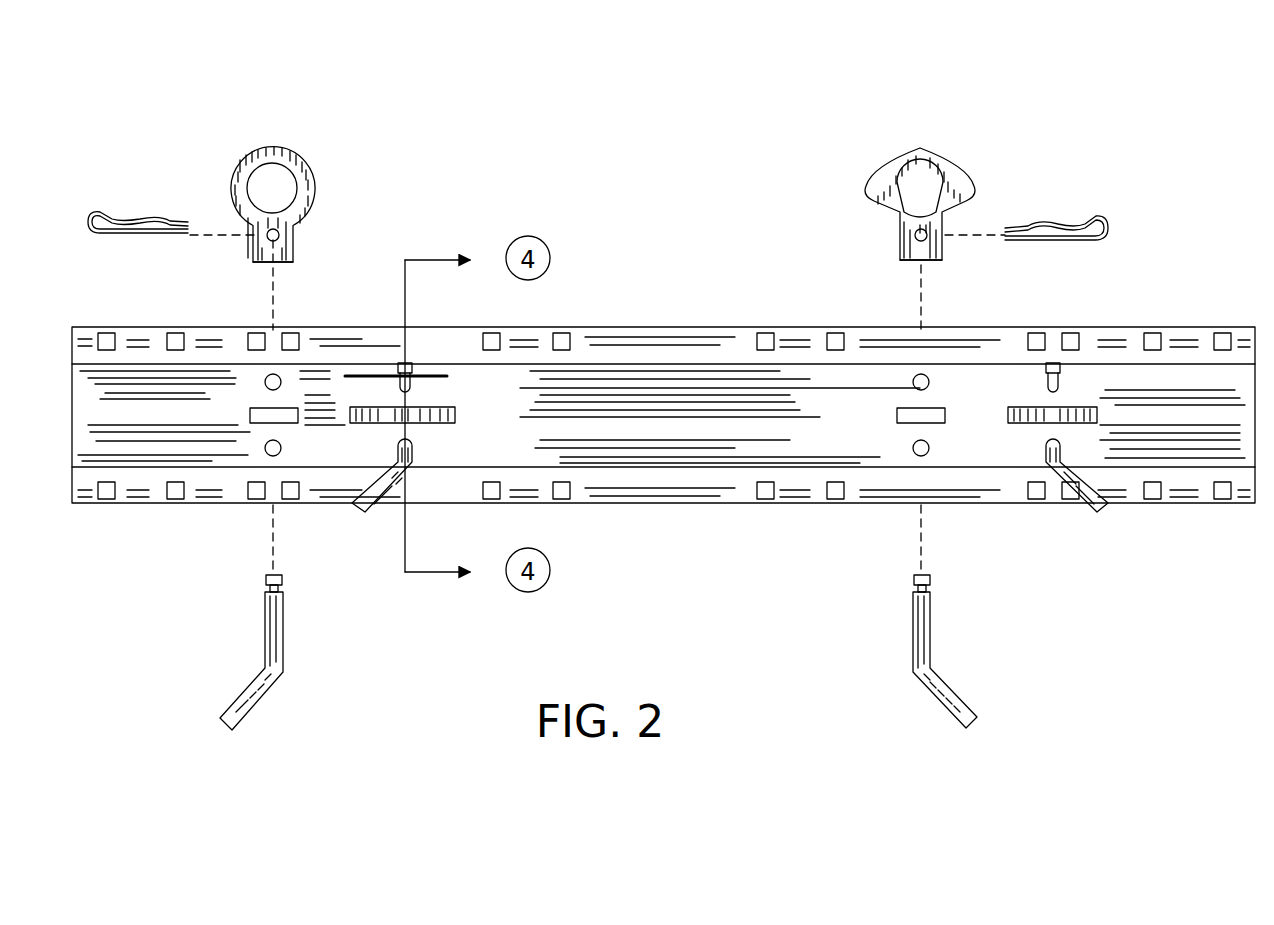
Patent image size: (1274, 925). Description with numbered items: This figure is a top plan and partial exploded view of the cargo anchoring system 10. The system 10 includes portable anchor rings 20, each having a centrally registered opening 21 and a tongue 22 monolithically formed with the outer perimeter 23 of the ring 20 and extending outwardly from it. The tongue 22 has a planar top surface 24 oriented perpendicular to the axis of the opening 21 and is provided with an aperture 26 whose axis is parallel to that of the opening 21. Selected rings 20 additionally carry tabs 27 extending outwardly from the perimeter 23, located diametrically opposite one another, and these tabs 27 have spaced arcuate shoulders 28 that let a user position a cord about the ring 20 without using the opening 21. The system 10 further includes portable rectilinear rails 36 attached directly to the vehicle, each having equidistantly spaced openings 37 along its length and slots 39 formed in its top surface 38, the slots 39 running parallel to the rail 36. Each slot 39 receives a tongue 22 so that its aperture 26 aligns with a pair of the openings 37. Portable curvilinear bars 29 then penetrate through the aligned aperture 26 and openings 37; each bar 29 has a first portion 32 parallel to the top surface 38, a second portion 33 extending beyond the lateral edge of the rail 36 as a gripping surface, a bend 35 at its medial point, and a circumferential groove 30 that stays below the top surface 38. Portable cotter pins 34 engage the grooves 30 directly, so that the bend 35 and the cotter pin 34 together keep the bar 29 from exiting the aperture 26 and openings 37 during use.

The system 10 is at (725, 172).
The portable anchor ring 20 is at (304, 193).
The opening 21 is at (273, 185).
The tongue 22 is at (282, 255).
The outer perimeter 23 is at (278, 142).
The top surface 24 is at (298, 243).
The aperture 26 is at (268, 242).
The tab 27 is at (888, 168).
The arcuate shoulder 28 is at (866, 195).
The portable curvilinear bar 29 is at (380, 505).
The groove 30 is at (1062, 378).
The first portion 32 is at (268, 635).
The second portion 33 is at (238, 720).
The portable cotter pin 34 is at (128, 222).
The bend 35 is at (292, 676).
The portable rectilinear rail 36 is at (620, 330).
The opening 37 is at (265, 452).
The top surface 38 is at (702, 392).
The slot 39 is at (292, 420).